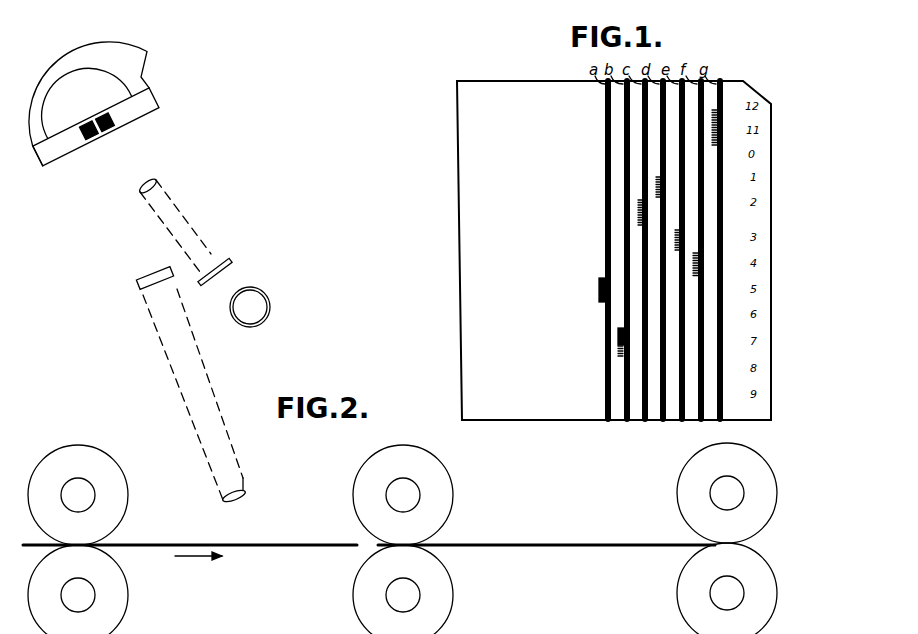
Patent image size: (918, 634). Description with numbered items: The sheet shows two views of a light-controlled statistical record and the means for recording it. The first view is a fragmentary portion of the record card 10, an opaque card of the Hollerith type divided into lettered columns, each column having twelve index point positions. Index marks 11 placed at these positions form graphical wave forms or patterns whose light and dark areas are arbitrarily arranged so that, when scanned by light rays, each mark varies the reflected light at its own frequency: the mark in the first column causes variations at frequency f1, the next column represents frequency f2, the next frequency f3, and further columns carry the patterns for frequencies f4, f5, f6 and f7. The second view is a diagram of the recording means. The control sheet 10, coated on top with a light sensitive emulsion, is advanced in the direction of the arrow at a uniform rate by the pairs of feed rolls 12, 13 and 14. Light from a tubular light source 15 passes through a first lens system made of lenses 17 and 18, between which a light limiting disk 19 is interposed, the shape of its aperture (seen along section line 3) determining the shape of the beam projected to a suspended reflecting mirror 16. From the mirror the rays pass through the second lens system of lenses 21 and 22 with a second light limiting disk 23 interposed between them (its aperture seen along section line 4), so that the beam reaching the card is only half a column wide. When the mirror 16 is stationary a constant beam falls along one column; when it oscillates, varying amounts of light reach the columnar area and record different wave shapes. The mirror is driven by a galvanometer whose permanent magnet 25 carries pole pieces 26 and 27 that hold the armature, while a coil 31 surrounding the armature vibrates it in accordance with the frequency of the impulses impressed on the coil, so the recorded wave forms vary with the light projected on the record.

In FIG. 1, the record card 10 is at (460, 127).
In FIG. 2, the record card 10 is at (308, 540).
In FIG. 1, the index marks 11 is at (712, 114).
In FIG. 2, the feed rolls 12 is at (107, 567).
In FIG. 2, the feed rolls 13 is at (428, 567).
In FIG. 2, the feed rolls 14 is at (693, 562).
In FIG. 2, the light source 15 is at (268, 316).
In FIG. 2, the reflecting mirror 16 is at (103, 140).
In FIG. 2, the lens 17 is at (158, 184).
In FIG. 2, the lens 18 is at (231, 262).
In FIG. 2, the light limiting disk 19 is at (223, 258).
In FIG. 2, the lens 21 is at (148, 270).
In FIG. 2, the lens 22 is at (244, 490).
In FIG. 2, the light limiting disk 23 is at (148, 290).
In FIG. 2, the permanent magnet 25 is at (92, 50).
In FIG. 2, the pole piece 26 is at (145, 98).
In FIG. 2, the pole piece 27 is at (52, 153).
In FIG. 2, the coil 31 is at (108, 112).
In FIG. 2, the section line 3- 3 is at (260, 267).
In FIG. 2, the section line 4- 4 is at (150, 380).
In FIG. 1, the frequency f1 is at (599, 288).
In FIG. 1, the frequency f2 is at (618, 350).
In FIG. 1, the frequency f3 is at (638, 214).
In FIG. 1, the frequency f4 is at (656, 187).
In FIG. 1, the frequency f5 is at (676, 245).
In FIG. 1, the frequency f6 is at (695, 253).
In FIG. 1, the frequency f7 is at (712, 142).